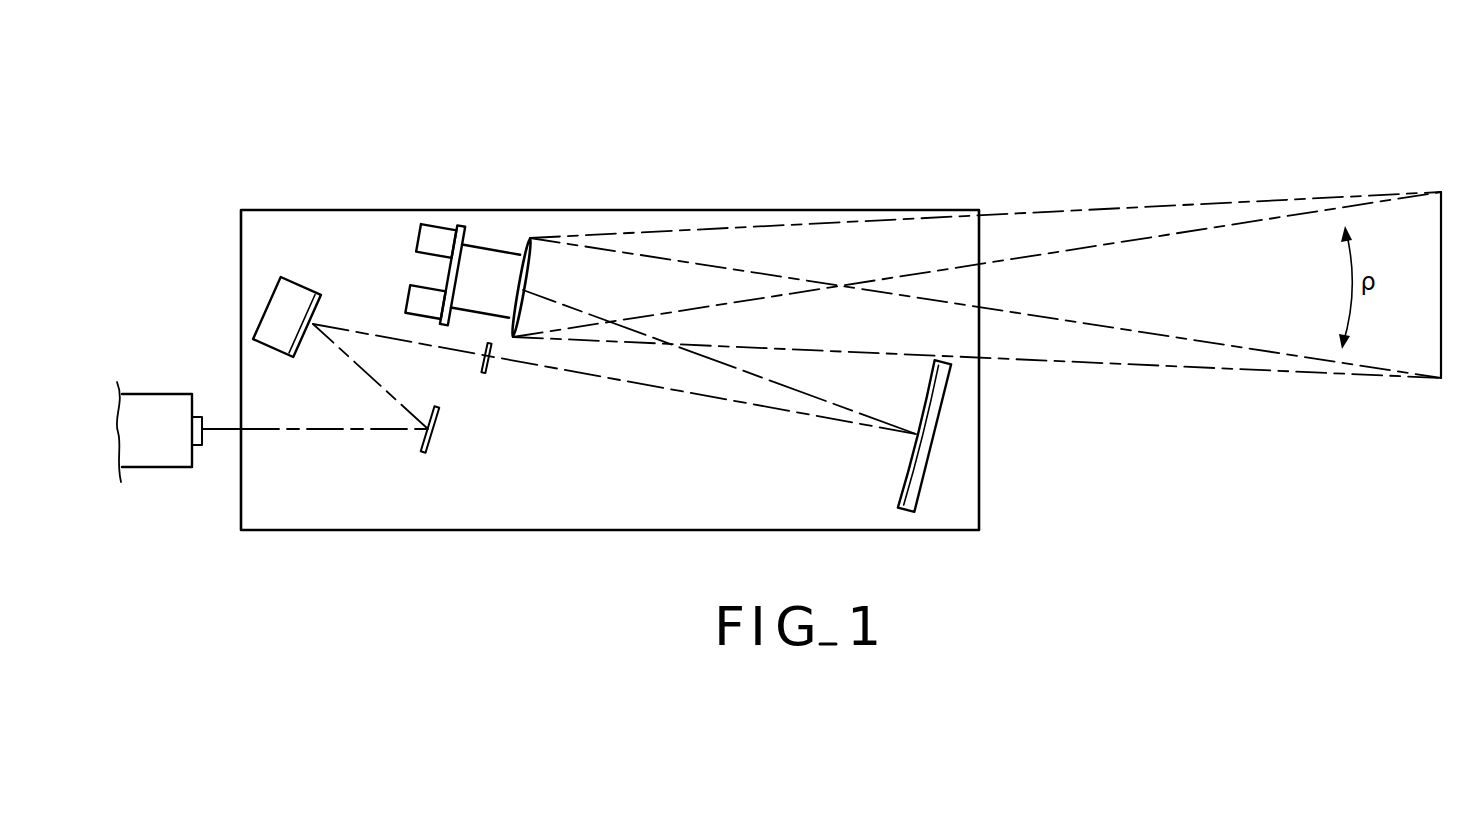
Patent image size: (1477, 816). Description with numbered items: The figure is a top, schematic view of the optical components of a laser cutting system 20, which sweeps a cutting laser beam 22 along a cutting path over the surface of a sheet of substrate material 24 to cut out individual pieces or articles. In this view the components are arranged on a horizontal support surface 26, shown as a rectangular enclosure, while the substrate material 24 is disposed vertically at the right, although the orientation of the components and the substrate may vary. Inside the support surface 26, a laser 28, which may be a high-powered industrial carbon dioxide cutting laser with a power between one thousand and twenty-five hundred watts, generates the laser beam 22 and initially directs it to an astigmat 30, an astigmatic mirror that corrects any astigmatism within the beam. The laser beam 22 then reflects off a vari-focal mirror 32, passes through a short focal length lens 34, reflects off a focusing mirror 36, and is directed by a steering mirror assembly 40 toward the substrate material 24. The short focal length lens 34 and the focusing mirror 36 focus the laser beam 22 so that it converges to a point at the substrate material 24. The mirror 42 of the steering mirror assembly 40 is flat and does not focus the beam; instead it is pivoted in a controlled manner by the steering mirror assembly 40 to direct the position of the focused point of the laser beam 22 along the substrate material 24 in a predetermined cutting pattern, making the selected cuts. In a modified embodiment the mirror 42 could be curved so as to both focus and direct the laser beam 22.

The laser cutting system 20 is at (877, 86).
The laser beam 22 is at (297, 432).
The substrate material 24 is at (1441, 223).
The horizontal support surface 26 is at (460, 532).
The laser 28 is at (158, 394).
The astigmat 30 is at (431, 444).
The vari-focal mirror 32 is at (295, 279).
The short focal length lens 34 is at (487, 375).
The focusing mirror 36 is at (923, 462).
The steering mirror assembly 40 is at (493, 230).
The mirror 42 is at (531, 243).